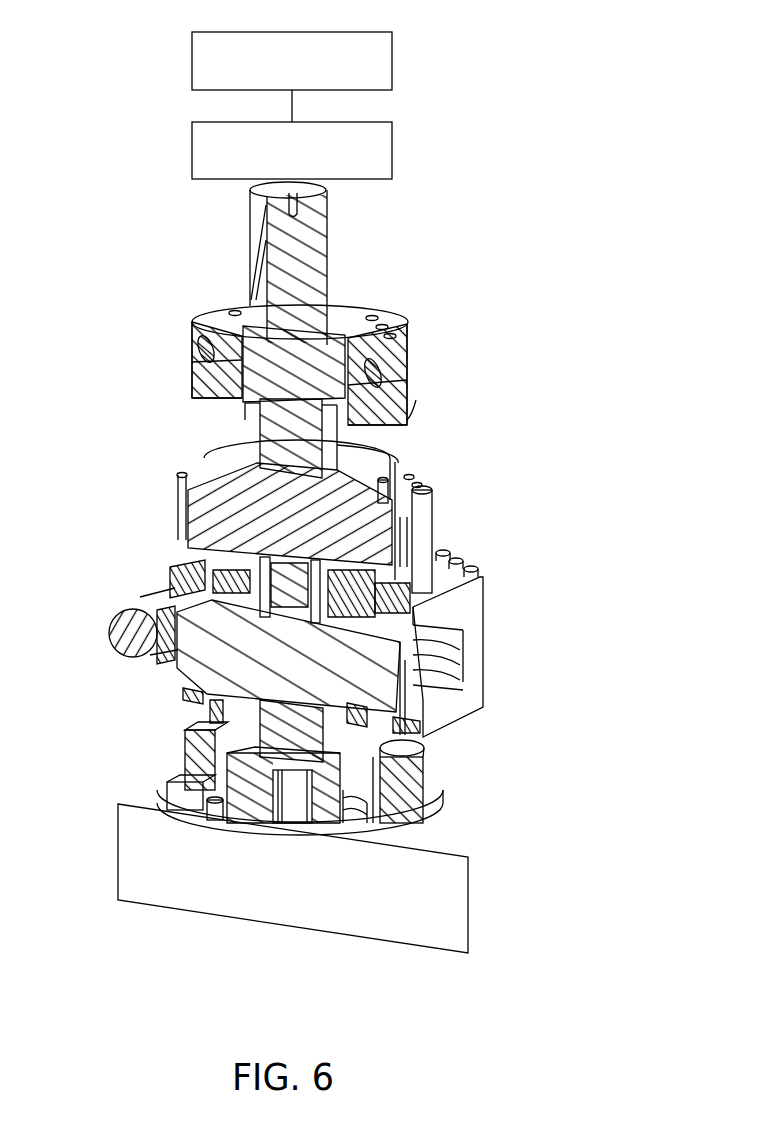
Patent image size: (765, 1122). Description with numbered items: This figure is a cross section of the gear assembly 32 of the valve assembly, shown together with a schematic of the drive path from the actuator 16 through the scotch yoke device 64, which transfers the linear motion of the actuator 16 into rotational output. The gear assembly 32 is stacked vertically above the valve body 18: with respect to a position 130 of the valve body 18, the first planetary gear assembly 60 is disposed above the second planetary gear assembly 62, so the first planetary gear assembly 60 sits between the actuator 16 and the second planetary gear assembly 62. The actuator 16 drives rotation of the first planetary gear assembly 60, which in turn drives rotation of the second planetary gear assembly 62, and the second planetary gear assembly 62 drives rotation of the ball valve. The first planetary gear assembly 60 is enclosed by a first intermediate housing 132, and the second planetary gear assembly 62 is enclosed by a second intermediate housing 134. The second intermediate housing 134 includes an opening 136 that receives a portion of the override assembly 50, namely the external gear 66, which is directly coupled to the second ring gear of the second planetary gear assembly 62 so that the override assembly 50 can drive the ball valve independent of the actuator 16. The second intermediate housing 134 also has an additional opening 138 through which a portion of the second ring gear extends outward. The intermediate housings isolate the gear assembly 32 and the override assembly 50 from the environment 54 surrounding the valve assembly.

The actuator 16 is at (392, 57).
The scotch yoke device 64 is at (392, 152).
The gear assembly 32 is at (427, 446).
The first planetary gear assembly 60 is at (444, 511).
The first intermediate housing 132 is at (425, 523).
The second intermediate housing 134 is at (480, 633).
The additional opening 138 is at (470, 682).
The second planetary gear assembly 62 is at (530, 713).
The override assembly 50 is at (112, 590).
The external gear 66 is at (110, 632).
The opening 136 is at (158, 665).
The position 130 is at (473, 830).
The valve body 18 is at (468, 905).
The environment 54 is at (616, 575).